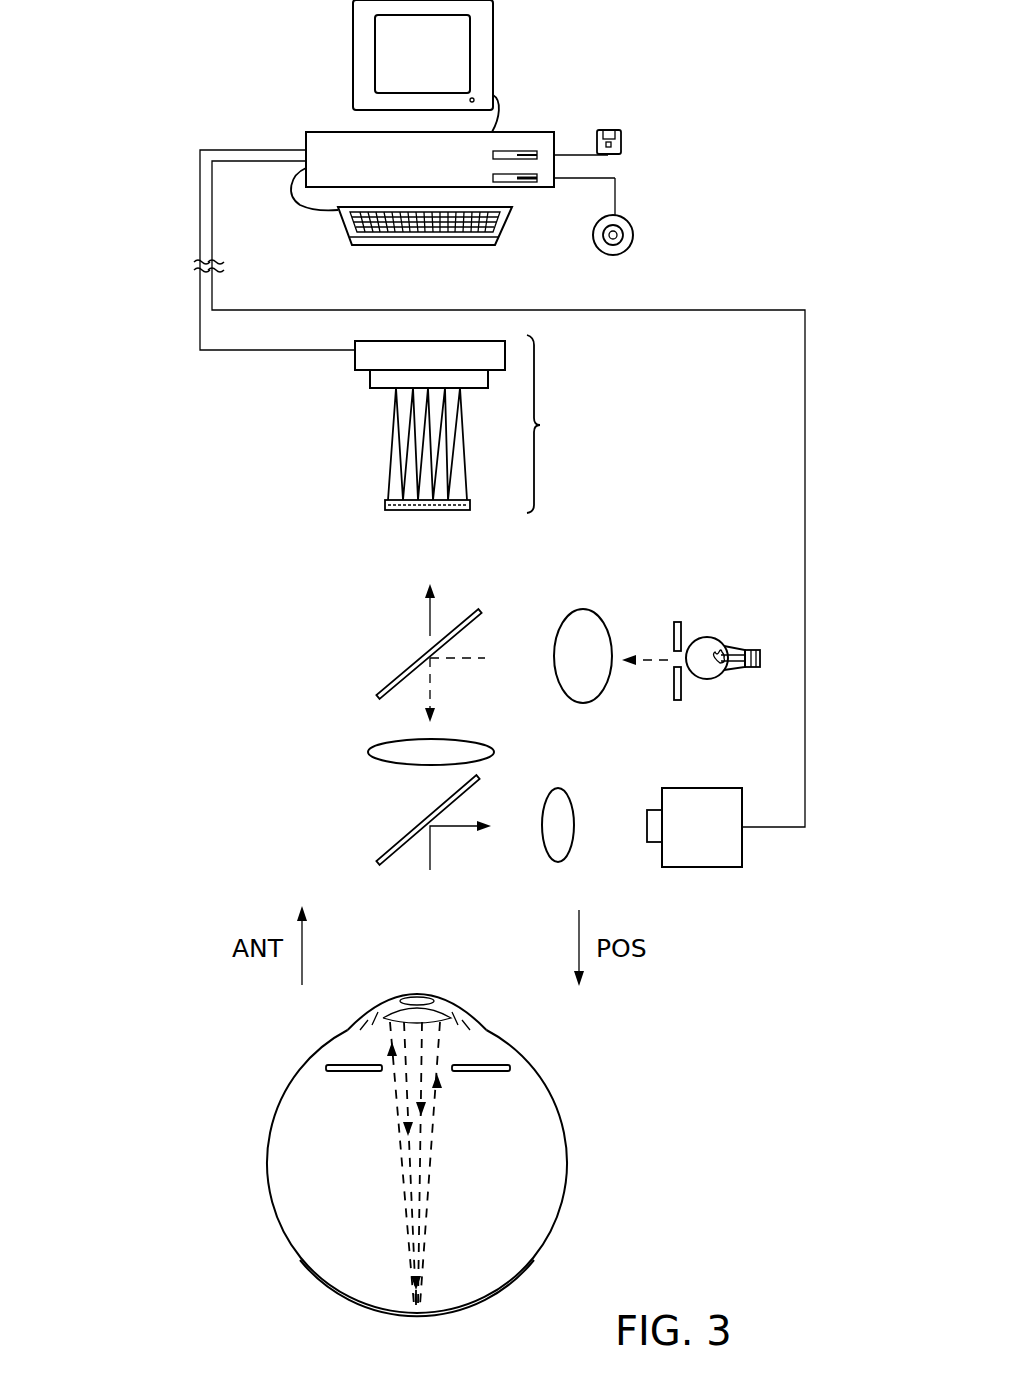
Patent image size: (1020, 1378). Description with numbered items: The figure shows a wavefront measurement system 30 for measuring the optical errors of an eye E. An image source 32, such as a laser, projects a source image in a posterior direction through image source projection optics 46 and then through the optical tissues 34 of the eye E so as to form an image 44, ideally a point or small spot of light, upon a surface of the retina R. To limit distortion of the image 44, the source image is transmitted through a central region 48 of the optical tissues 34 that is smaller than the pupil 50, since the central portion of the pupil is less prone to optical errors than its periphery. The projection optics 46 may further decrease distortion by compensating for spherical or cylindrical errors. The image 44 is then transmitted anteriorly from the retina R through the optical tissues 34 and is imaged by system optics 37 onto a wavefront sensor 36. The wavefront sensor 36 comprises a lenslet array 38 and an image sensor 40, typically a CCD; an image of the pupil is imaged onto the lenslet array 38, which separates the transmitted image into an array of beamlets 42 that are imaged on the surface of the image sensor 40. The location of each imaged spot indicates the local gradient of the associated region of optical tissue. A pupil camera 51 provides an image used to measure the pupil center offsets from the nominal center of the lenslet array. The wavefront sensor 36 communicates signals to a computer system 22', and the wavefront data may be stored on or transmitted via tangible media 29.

The wavefront measurement system 30 is at (166, 68).
The computer system 22' is at (496, 122).
The tangible media 29 is at (622, 140).
The wavefront sensor 36 is at (426, 428).
The image sensor 40 is at (380, 388).
The array of beamlets 42 is at (403, 412).
The lenslet array 38 is at (385, 505).
The image source projection optics 46 is at (583, 609).
The image source 32 is at (710, 602).
The system optics 37 is at (368, 752).
The pupil camera 51 is at (728, 868).
The central region of optical tissues 48 is at (416, 995).
The optical tissues 34 is at (445, 986).
The pupil 50 is at (505, 1067).
The eye E is at (267, 1118).
The image 44 is at (416, 1311).
The retina R is at (450, 1295).